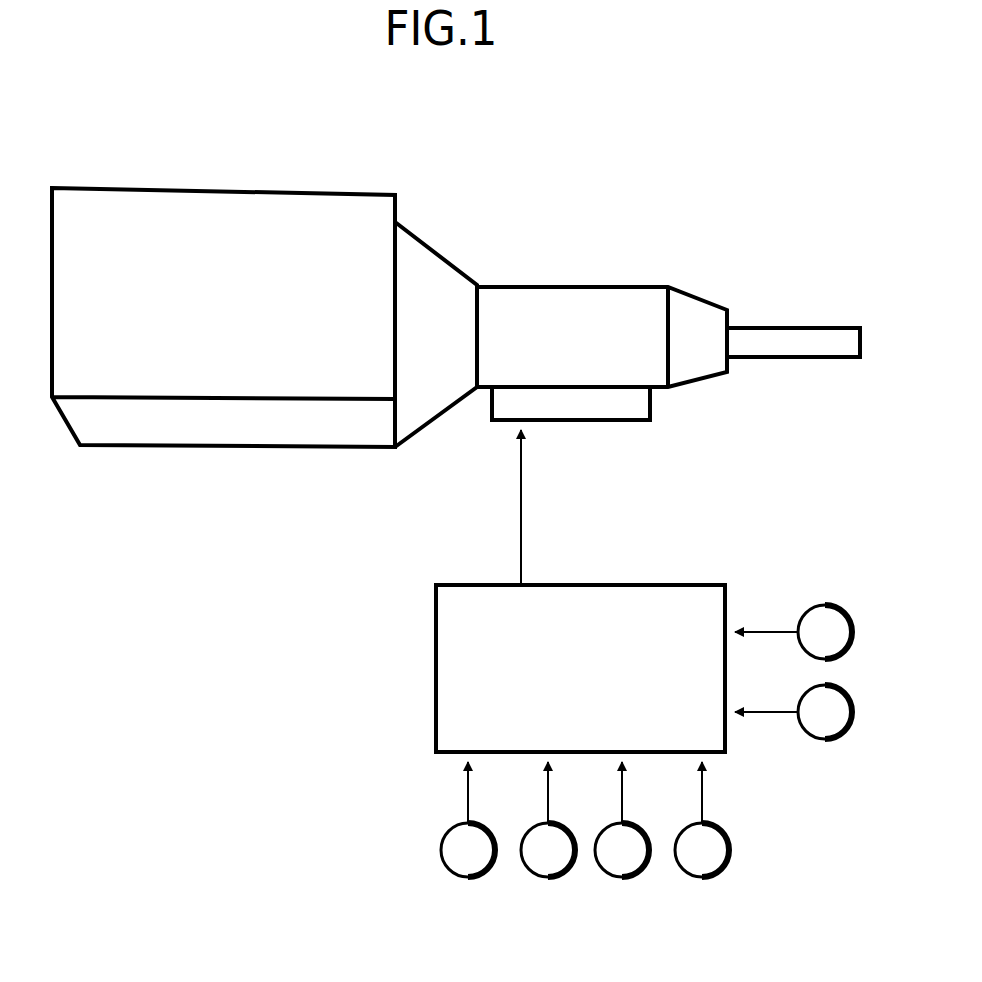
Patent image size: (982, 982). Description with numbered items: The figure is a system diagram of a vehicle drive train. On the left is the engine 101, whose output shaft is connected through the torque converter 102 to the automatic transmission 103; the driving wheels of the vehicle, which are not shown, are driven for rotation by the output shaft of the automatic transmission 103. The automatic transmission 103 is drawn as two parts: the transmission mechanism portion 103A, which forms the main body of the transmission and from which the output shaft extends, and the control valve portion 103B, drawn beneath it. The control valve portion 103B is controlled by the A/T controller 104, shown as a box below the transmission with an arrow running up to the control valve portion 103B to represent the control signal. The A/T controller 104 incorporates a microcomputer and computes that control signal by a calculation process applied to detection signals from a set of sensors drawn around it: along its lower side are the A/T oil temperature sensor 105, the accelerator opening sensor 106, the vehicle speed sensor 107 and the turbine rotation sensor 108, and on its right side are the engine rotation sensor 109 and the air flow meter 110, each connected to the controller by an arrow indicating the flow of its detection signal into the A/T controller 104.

The engine 101 is at (216, 212).
The torque converter 102 is at (432, 270).
The automatic transmission 103 is at (585, 180).
The transmission mechanism portion 103A is at (605, 303).
The control valve portion 103B is at (615, 408).
The A/T controller 104 is at (436, 660).
The A/T oil temperature sensor 105 is at (470, 880).
The accelerator opening sensor 106 is at (550, 880).
The vehicle speed sensor 107 is at (623, 880).
The turbine rotation sensor 108 is at (705, 880).
The engine rotation sensor 109 is at (826, 740).
The air flow meter 110 is at (824, 604).